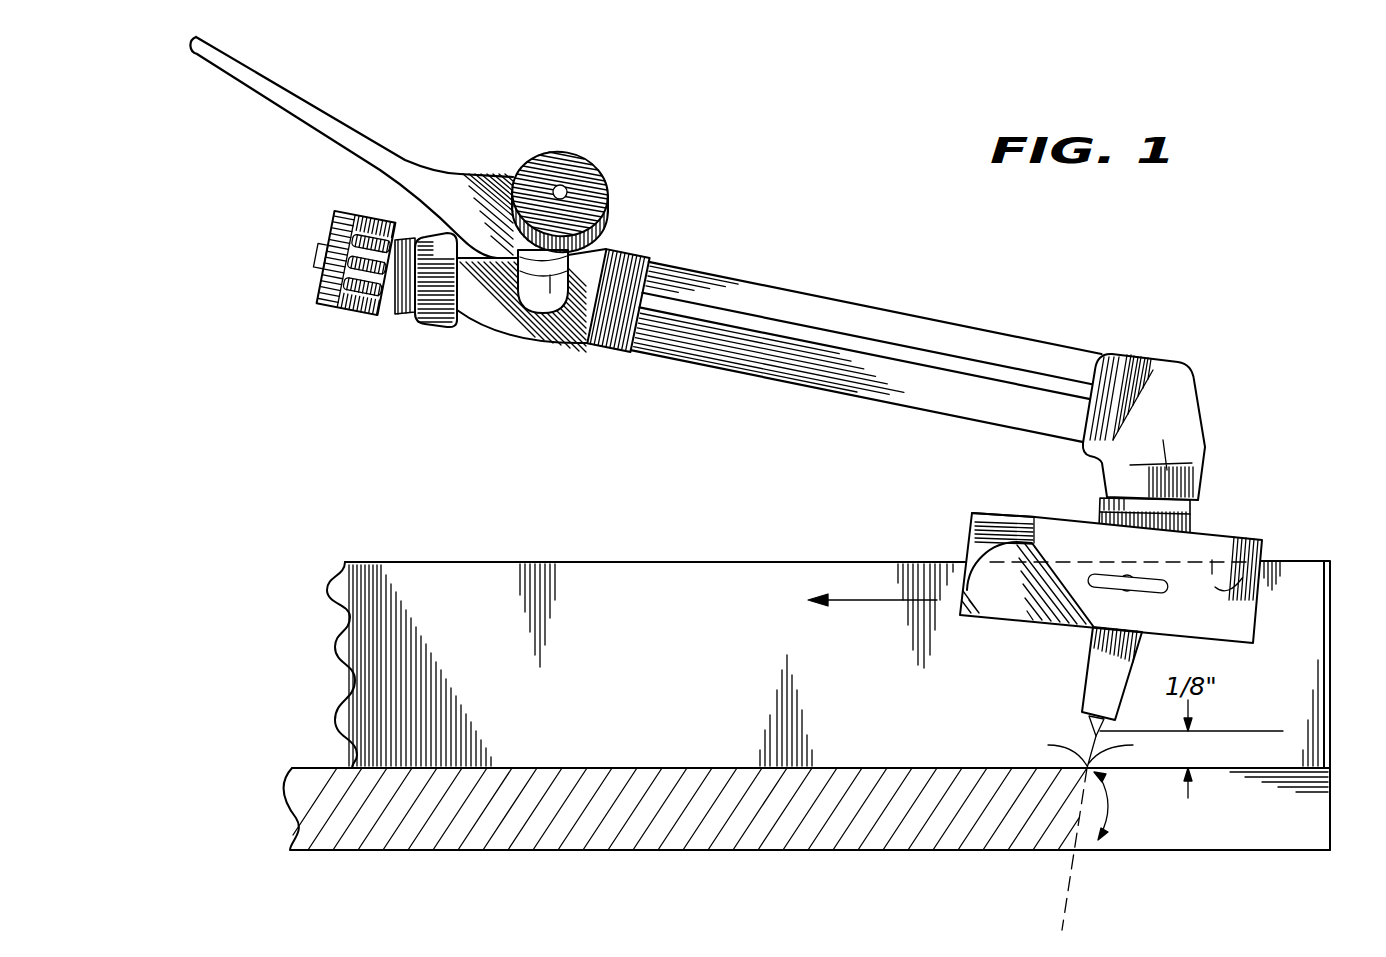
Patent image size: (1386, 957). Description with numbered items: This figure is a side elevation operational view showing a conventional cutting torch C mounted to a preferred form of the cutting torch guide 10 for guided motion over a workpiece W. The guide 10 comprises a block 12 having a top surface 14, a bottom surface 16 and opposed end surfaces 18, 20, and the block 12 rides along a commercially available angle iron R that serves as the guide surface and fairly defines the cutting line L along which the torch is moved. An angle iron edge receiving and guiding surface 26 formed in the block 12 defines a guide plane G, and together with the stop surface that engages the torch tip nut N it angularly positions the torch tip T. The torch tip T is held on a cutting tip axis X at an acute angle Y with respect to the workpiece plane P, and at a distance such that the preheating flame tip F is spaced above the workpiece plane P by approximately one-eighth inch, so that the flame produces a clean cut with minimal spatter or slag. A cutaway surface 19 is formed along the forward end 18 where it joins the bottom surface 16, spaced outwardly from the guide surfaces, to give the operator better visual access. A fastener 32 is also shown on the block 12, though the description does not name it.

The cutting torch guide 10 is at (902, 485).
The block 12 is at (1220, 518).
The top surface 14 is at (1010, 514).
The bottom surface 16 is at (1045, 623).
The end surface 18 is at (967, 543).
The cutaway surface 19 is at (1012, 594).
The end surface 20 is at (1260, 602).
The angle iron edge receiving and guiding surface 26 is at (1281, 557).
The clamping screw 32 is at (1133, 597).
The cutting torch C is at (1209, 364).
The torch tip nut N is at (1103, 500).
The torch tip T is at (1098, 678).
The preheating flame tip F is at (1093, 729).
The guide plane G is at (592, 562).
The angle iron R is at (675, 652).
The workpiece plane P is at (650, 768).
The workpiece W is at (292, 795).
The cutting line L is at (1276, 822).
The cutting tip axis X is at (1067, 903).
The torch tip angle Y is at (1107, 806).